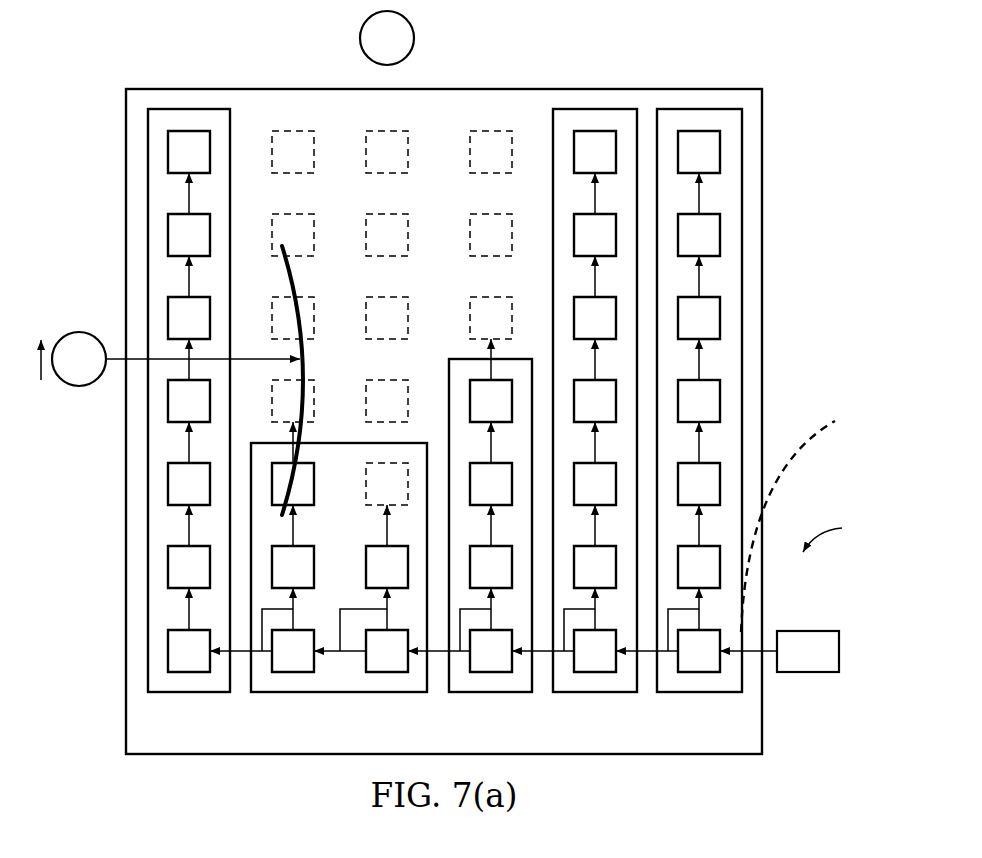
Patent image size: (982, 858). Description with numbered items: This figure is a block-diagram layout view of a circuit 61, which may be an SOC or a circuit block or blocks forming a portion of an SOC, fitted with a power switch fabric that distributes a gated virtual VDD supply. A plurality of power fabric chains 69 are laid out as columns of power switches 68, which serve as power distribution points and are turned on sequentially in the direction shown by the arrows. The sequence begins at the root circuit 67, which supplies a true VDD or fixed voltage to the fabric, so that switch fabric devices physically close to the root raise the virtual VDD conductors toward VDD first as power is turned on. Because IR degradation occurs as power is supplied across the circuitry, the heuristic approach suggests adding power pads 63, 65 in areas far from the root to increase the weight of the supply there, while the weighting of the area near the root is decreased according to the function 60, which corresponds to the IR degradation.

The function 60 is at (791, 484).
The circuit 61 is at (569, 87).
The power pad 63 is at (362, 36).
The power pad 65 is at (80, 333).
The root circuit 67 is at (808, 673).
The power switch 68 is at (687, 412).
The power fabric chain 69 is at (476, 428).